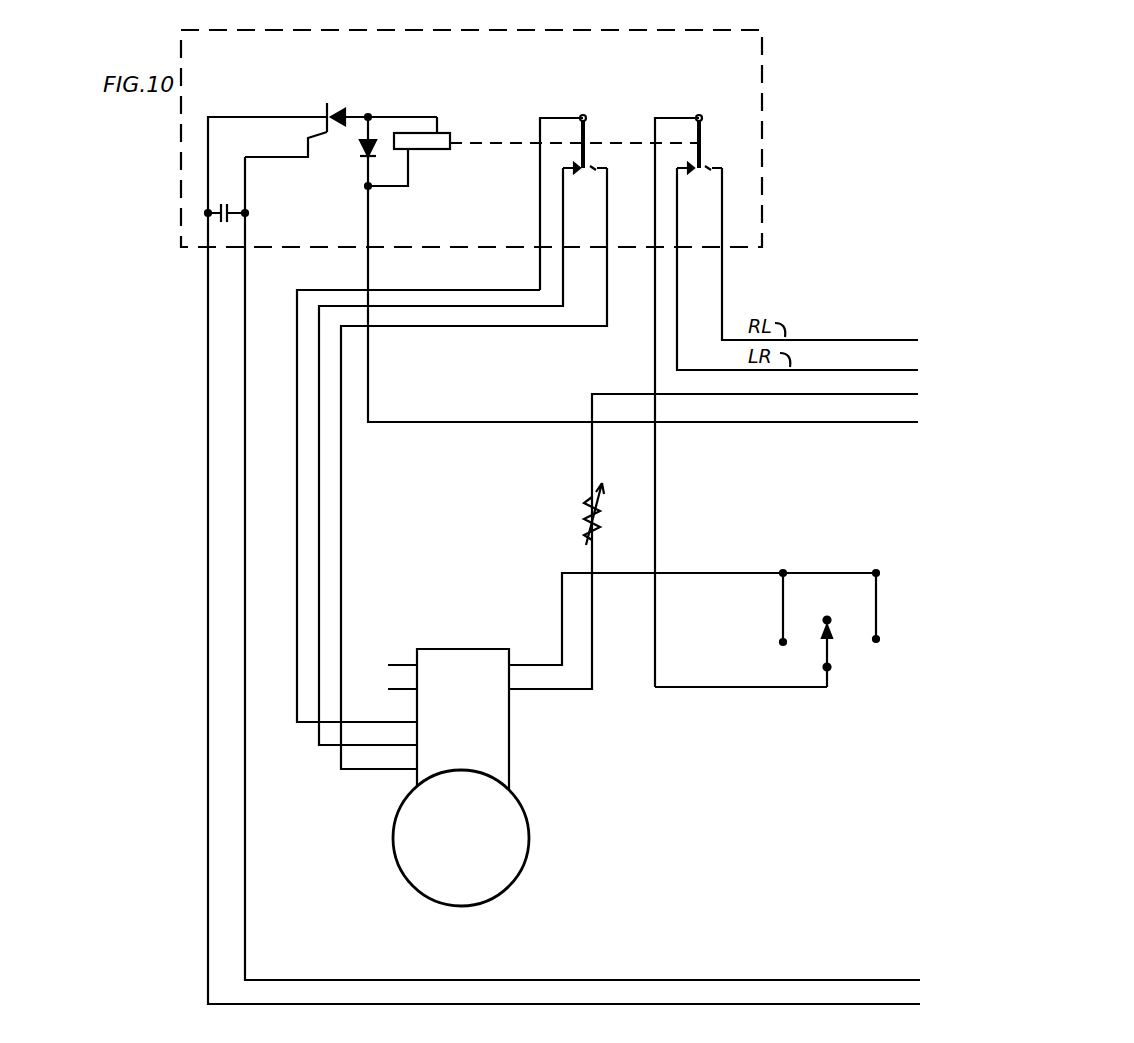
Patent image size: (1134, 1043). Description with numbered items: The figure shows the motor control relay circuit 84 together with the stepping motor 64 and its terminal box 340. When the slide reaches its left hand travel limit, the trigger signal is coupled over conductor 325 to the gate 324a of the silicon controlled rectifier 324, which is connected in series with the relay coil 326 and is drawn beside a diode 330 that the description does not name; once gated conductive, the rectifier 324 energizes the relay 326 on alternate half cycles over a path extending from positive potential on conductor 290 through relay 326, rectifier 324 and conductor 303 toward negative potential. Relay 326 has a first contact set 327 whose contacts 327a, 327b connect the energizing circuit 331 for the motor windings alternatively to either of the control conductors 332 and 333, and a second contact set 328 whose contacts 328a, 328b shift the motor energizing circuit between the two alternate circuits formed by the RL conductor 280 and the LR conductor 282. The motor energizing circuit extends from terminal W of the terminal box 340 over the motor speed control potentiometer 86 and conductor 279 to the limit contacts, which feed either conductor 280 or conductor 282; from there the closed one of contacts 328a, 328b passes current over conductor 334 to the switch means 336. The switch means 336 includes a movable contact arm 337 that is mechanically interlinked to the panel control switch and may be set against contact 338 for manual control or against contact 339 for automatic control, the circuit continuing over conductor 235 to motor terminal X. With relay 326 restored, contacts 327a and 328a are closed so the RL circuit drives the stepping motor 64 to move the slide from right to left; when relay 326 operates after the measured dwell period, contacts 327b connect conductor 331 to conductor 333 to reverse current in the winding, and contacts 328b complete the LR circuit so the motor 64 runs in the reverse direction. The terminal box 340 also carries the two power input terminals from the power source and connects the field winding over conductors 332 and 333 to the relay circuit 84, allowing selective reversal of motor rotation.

The motor control relay circuit 84 is at (670, 32).
The conductor 303 is at (246, 112).
The silicon controlled rectifier 324 is at (329, 110).
The gate 324a is at (322, 103).
The conductor 325 is at (246, 229).
The diode 330 is at (359, 152).
The relay coil 326 is at (437, 150).
The conductor 290 is at (366, 227).
The contacts 327 is at (576, 124).
The contacts 327a is at (596, 158).
The contacts 327b is at (566, 158).
The contacts 328 is at (702, 130).
The contacts 328a is at (720, 158).
The contacts 328b is at (686, 152).
The energizing circuit 331 is at (540, 175).
The control conductor 332 is at (607, 206).
The control conductor 333 is at (563, 188).
The RL conductor 280 is at (722, 200).
The LR conductor 282 is at (680, 258).
The conductor 279 is at (590, 446).
The motor speed control potentiometer 86 is at (598, 517).
The conductor 334 is at (657, 459).
The conductor 235 is at (739, 574).
The contact 338 is at (778, 640).
The contact 339 is at (878, 638).
The movable contact arm 337 is at (822, 647).
The switch means 336 is at (846, 660).
The motor terminal box 340 is at (500, 753).
The stepping motor 64 is at (512, 833).